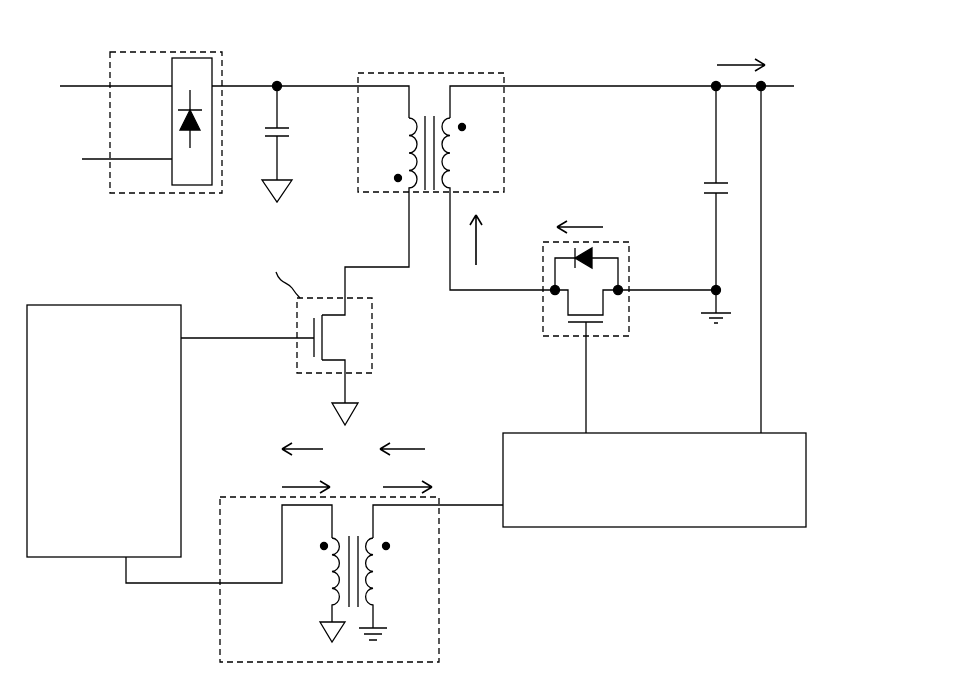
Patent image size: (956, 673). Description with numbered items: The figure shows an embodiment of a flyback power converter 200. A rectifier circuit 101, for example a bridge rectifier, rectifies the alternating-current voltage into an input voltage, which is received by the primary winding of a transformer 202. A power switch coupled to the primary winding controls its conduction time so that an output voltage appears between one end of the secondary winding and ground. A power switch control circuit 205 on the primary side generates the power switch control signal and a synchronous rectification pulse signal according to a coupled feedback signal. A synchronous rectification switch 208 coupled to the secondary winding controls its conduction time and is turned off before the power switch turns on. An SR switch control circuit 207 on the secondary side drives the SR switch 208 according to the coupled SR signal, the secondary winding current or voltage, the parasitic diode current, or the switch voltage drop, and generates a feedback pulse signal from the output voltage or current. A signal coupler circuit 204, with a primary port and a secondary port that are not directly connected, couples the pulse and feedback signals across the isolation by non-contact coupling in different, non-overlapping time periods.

The flyback power converter 200 is at (826, 60).
The rectifier circuit 101 is at (148, 188).
The transformer 202 is at (438, 73).
The signal coupler circuit 204 is at (262, 658).
The power switch control circuit 205 is at (118, 480).
The synchronous rectification (SR) switch control circuit 207 is at (790, 522).
The synchronous rectification (SR) switch 208 is at (592, 336).